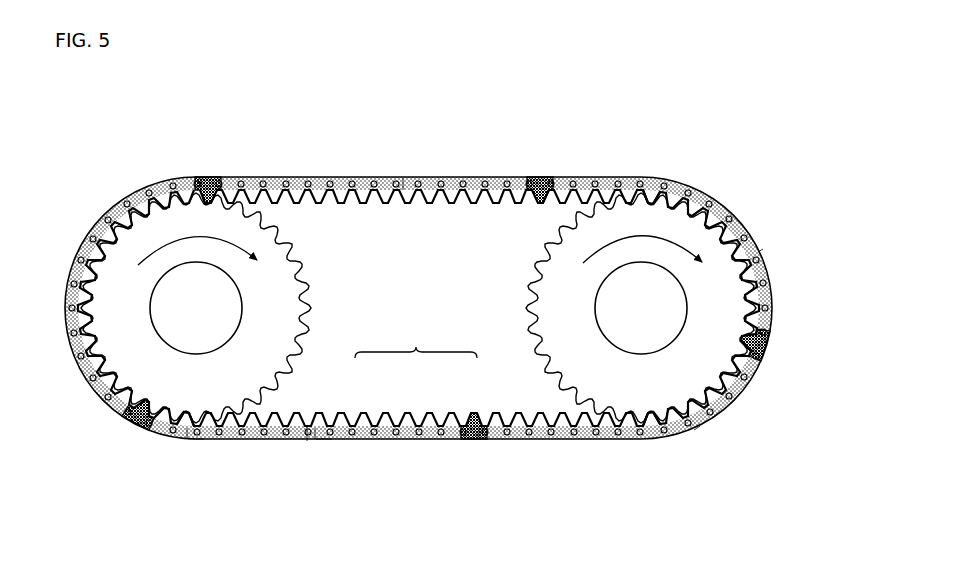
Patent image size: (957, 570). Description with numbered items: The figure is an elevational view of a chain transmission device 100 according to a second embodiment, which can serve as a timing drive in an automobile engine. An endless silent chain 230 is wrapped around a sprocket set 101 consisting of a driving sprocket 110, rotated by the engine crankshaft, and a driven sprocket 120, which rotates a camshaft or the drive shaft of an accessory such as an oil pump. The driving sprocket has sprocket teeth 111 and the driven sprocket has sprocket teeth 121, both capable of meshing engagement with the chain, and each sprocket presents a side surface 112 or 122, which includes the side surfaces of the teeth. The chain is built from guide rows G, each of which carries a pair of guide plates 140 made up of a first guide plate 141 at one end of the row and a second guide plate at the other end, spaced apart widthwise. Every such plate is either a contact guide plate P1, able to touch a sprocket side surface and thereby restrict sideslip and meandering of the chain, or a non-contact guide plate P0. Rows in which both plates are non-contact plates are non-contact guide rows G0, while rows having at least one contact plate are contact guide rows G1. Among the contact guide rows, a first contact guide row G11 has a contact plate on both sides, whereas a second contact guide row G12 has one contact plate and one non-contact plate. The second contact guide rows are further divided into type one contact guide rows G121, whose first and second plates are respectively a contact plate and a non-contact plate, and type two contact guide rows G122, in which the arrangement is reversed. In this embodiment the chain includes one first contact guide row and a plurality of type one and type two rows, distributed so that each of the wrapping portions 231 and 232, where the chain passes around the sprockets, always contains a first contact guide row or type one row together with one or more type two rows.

The chain transmission device 100 is at (722, 119).
The sprocket set 101 is at (416, 341).
The driving sprocket 110 is at (270, 355).
The sprocket teeth 111 is at (317, 303).
The side surface 112 is at (283, 240).
The driven sprocket 120 is at (548, 358).
The sprocket teeth 121 is at (525, 305).
The side surface 122 is at (545, 240).
The guide plates 140 is at (418, 478).
The first guide plate 141 is at (395, 491).
The chain 230 is at (349, 156).
The wrapping portion 231 is at (86, 398).
The wrapping portion 232 is at (748, 214).
The non-contact guide plate P0 is at (315, 441).
The contact guide plate P1 is at (201, 176).
The guide row G is at (591, 90).
The non-contact guide row G0 is at (403, 174).
The contact guide row G1 is at (560, 90).
The first contact guide row G11 is at (770, 348).
The second contact guide row G12 is at (524, 90).
The type 1 contact guide row G121 is at (187, 173).
The type 2 contact guide row G122 is at (238, 173).